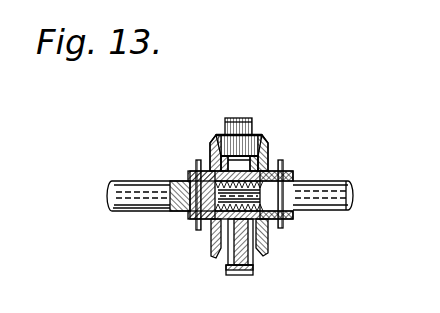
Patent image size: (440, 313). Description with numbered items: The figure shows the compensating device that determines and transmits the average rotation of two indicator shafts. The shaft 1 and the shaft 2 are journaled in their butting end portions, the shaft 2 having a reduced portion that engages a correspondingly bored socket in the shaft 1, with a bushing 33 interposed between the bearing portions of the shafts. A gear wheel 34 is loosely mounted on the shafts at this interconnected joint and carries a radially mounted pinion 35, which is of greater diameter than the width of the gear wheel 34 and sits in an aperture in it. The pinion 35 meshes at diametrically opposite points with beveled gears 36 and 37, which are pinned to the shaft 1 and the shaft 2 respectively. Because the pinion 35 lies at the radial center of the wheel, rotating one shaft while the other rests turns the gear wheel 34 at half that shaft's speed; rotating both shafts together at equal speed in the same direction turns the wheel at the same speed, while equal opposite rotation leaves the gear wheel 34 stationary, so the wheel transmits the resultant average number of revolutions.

The shaft 1 is at (110, 181).
The shaft 2 is at (328, 173).
The bushing 33 is at (200, 212).
The gear wheel 34 is at (245, 259).
The pinion 35 is at (237, 126).
The beveled gear 36 is at (203, 146).
The beveled gear 37 is at (254, 136).